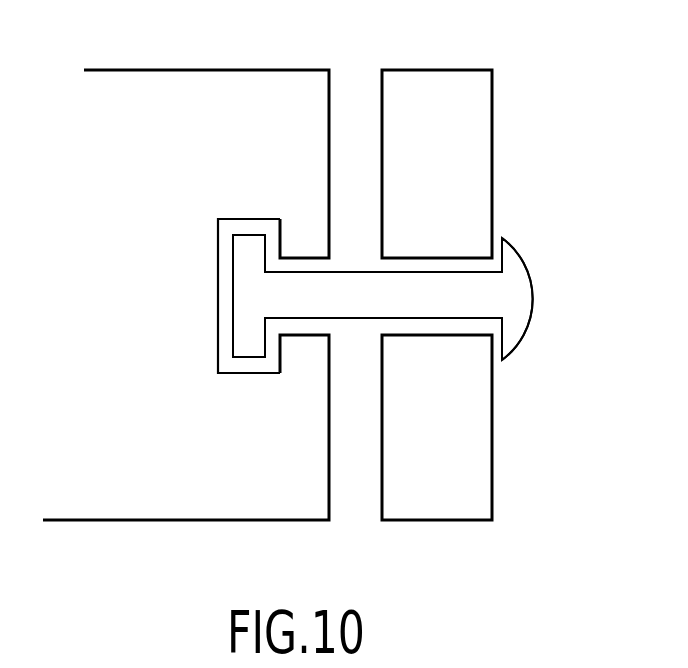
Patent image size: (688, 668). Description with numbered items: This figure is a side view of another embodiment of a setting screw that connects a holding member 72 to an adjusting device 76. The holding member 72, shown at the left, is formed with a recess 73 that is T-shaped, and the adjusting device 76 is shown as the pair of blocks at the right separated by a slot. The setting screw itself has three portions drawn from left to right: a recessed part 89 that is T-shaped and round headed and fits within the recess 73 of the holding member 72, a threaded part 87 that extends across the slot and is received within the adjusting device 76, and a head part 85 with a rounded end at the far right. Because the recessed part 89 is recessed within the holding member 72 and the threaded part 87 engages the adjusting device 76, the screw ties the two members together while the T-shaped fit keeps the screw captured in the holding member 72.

The holding member 72 is at (264, 70).
The recess 73 is at (264, 219).
The adjusting device 76 is at (444, 70).
The head part 85 is at (518, 250).
The threaded part 87 is at (448, 318).
The recessed part 89 is at (242, 346).